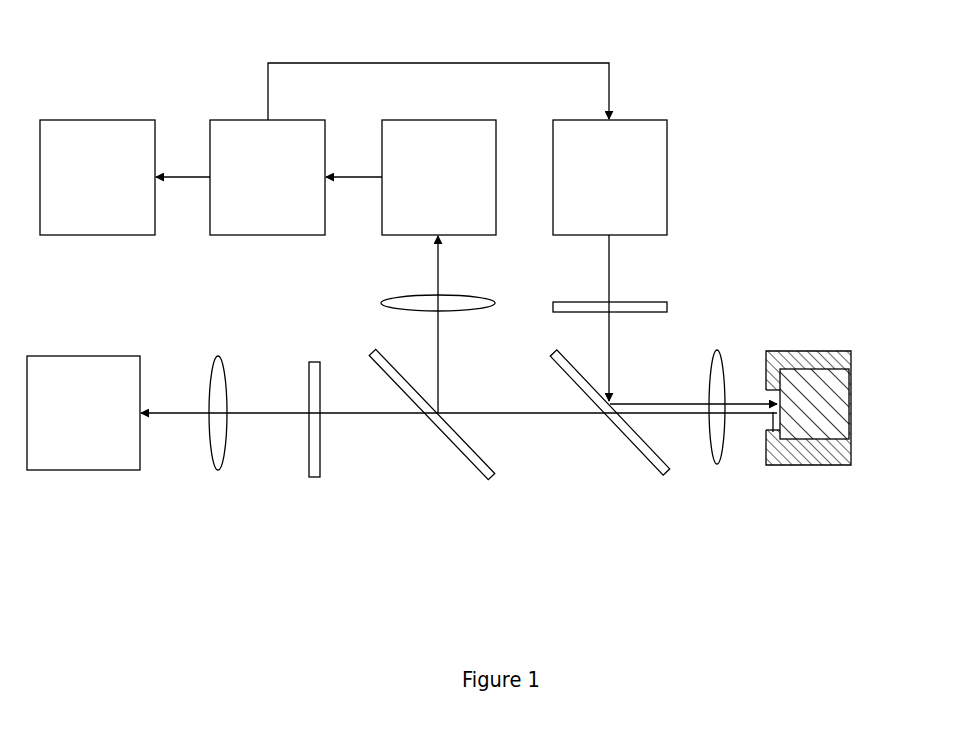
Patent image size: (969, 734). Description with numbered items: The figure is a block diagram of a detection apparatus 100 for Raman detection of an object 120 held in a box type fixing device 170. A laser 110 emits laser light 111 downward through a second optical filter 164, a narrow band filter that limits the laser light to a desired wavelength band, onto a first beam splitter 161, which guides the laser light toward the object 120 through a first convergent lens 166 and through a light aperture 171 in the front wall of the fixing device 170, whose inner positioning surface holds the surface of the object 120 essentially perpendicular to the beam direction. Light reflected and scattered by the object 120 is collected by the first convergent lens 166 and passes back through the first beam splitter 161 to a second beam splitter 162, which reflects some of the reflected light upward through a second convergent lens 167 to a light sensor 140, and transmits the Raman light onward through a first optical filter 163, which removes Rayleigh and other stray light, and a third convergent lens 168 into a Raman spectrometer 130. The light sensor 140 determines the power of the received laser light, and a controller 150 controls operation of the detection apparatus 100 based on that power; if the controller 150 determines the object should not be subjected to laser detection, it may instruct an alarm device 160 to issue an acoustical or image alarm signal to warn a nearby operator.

The detection apparatus 100 is at (37, 54).
The laser 110 is at (610, 177).
The laser light 111 is at (613, 282).
The object 120 is at (833, 435).
The Raman spectrometer 130 is at (83, 413).
The light sensor 140 is at (439, 177).
The controller 150 is at (267, 177).
The alarm device 160 is at (97, 177).
The first beam splitter 161 is at (640, 455).
The second beam splitter 162 is at (465, 455).
The first optical filter 163 is at (312, 478).
The second optical filter 164 is at (650, 300).
The first convergent lens 166 is at (717, 464).
The second convergent lens 167 is at (383, 305).
The third convergent lens 168 is at (218, 470).
The fixing device 170 is at (838, 434).
The light aperture 171 is at (775, 420).